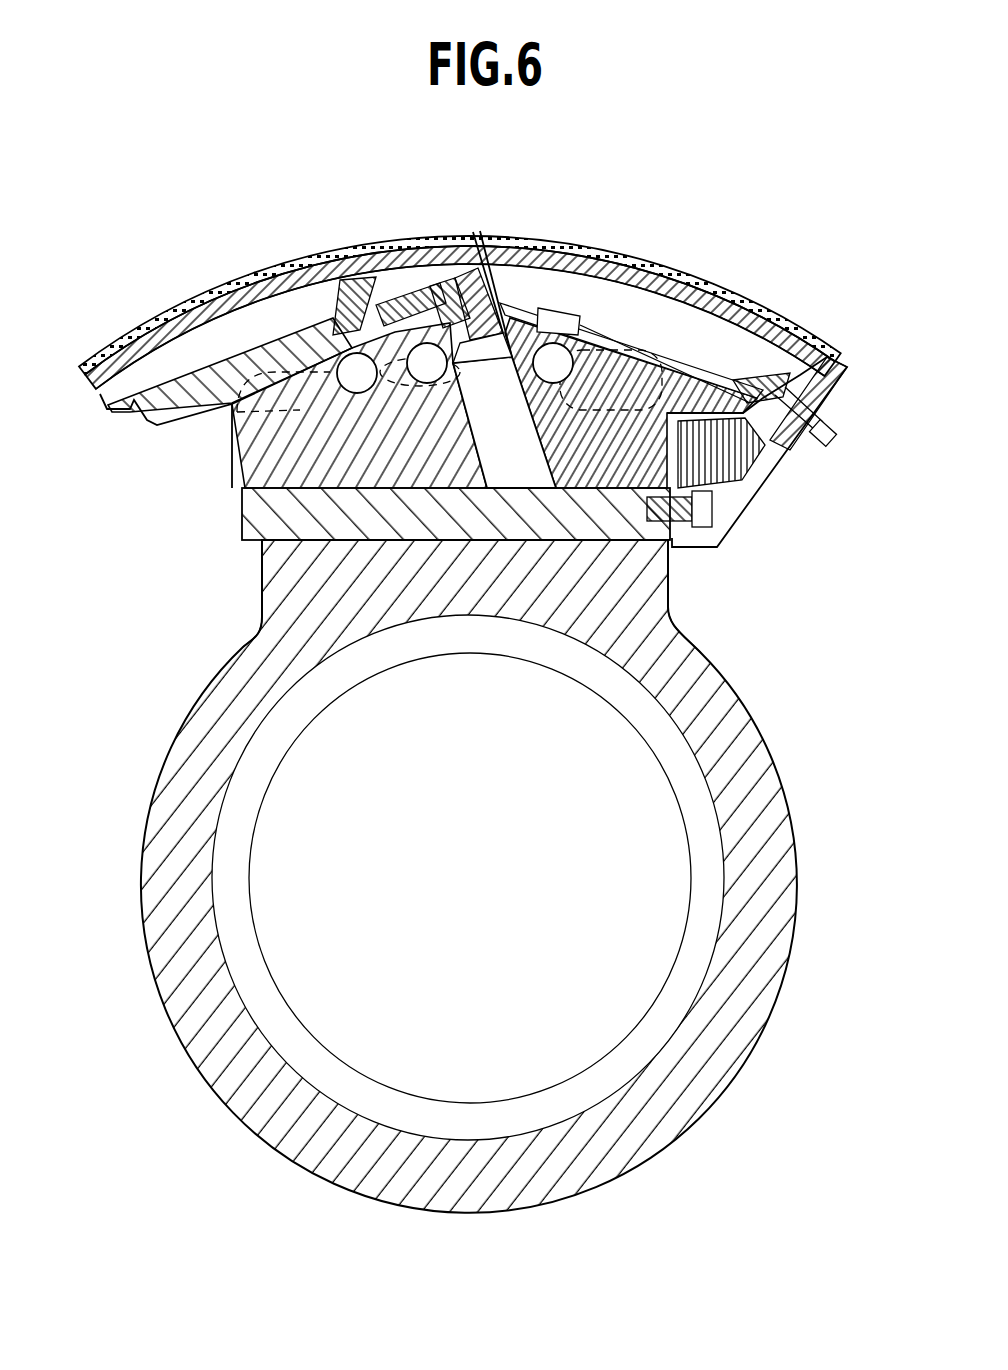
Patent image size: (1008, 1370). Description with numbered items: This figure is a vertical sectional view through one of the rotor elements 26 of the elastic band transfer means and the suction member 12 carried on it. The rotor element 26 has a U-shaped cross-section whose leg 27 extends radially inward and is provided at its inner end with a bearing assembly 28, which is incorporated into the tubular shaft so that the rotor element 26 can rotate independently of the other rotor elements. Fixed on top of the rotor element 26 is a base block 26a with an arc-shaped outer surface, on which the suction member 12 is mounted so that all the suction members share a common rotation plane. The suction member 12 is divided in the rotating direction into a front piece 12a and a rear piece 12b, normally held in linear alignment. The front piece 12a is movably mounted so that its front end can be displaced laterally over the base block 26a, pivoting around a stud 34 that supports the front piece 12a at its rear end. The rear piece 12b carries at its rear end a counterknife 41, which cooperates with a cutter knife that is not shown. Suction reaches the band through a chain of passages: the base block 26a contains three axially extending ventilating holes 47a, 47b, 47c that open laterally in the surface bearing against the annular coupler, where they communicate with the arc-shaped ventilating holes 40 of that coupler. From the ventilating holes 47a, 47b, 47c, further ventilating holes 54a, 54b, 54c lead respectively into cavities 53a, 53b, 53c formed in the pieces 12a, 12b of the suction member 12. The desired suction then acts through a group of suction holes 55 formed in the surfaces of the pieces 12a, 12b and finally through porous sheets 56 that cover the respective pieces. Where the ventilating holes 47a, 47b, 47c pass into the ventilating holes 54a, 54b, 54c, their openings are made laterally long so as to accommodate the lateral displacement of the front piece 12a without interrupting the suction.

The suction member 12 is at (80, 396).
The front piece 12a is at (208, 297).
The rear piece 12b is at (647, 258).
The rotor element 26 is at (260, 507).
The base block 26a is at (243, 460).
The leg 27 is at (628, 573).
The bearing assembly 28 is at (703, 827).
The stud 34 is at (506, 233).
The ventilating hole 40 is at (662, 345).
The counterknife 41 is at (827, 387).
The ventilating hole 47a is at (353, 378).
The ventilating hole 47b is at (424, 380).
The ventilating hole 47c is at (553, 378).
The cavity 53a is at (295, 315).
The cavity 53b is at (390, 288).
The cavity 53c is at (678, 320).
The ventilating hole 54a is at (338, 333).
The ventilating hole 54b is at (437, 268).
The ventilating hole 54c is at (560, 322).
The suction hole 55 is at (173, 307).
The porous sheet 56 is at (247, 275).